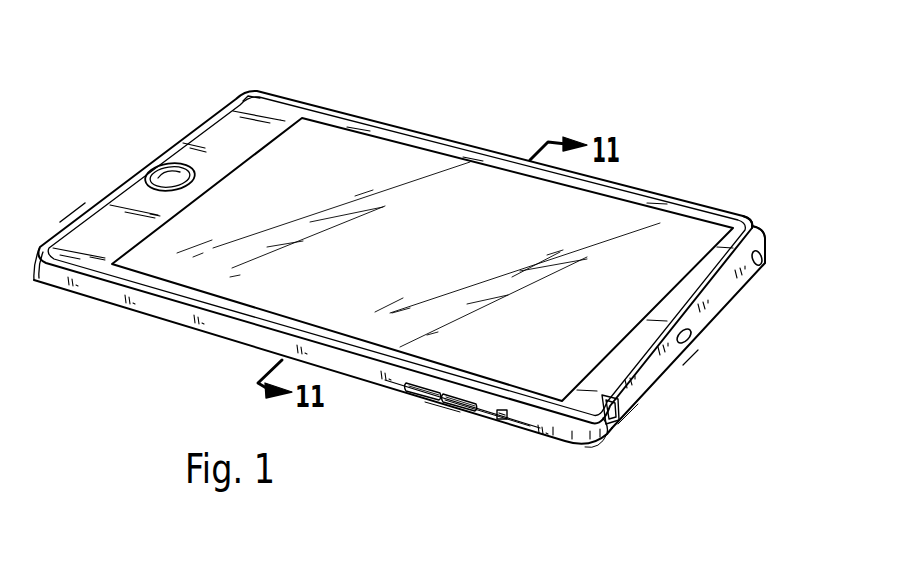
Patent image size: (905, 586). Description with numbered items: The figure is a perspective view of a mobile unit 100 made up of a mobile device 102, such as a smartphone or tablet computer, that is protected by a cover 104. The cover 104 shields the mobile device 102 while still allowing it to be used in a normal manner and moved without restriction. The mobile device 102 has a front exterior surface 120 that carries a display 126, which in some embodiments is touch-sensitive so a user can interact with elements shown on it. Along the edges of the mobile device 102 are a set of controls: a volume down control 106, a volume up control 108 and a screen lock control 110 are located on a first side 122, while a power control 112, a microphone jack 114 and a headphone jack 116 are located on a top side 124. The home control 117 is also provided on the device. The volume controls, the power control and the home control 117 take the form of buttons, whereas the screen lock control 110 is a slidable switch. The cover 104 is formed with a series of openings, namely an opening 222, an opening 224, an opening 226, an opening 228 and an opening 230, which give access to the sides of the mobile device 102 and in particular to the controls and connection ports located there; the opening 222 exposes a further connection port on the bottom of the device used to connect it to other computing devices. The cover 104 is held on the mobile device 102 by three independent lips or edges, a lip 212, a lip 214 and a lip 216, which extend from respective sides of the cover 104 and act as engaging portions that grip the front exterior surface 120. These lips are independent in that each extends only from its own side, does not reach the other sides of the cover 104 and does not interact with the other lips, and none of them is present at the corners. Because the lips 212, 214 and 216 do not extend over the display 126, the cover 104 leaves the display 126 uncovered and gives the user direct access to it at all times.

The mobile unit 100 is at (563, 79).
The mobile device 102 is at (247, 119).
The cover 104 is at (60, 222).
The volume down control 106 is at (422, 397).
The volume up control 108 is at (457, 405).
The screen lock control 110 is at (502, 424).
The power control 112 is at (612, 418).
The microphone jack 114 is at (689, 344).
The headphone jack 116 is at (762, 266).
The home control 117 is at (186, 175).
The front exterior surface 120 is at (748, 216).
The first side 122 is at (427, 417).
The top side 124 is at (604, 441).
The display 126 is at (352, 182).
The lip 212 is at (334, 117).
The lip 214 is at (713, 281).
The lip 216 is at (93, 268).
The opening 222 is at (131, 163).
The opening 224 is at (470, 431).
The opening 226 is at (636, 419).
The opening 228 is at (681, 366).
The opening 230 is at (770, 246).